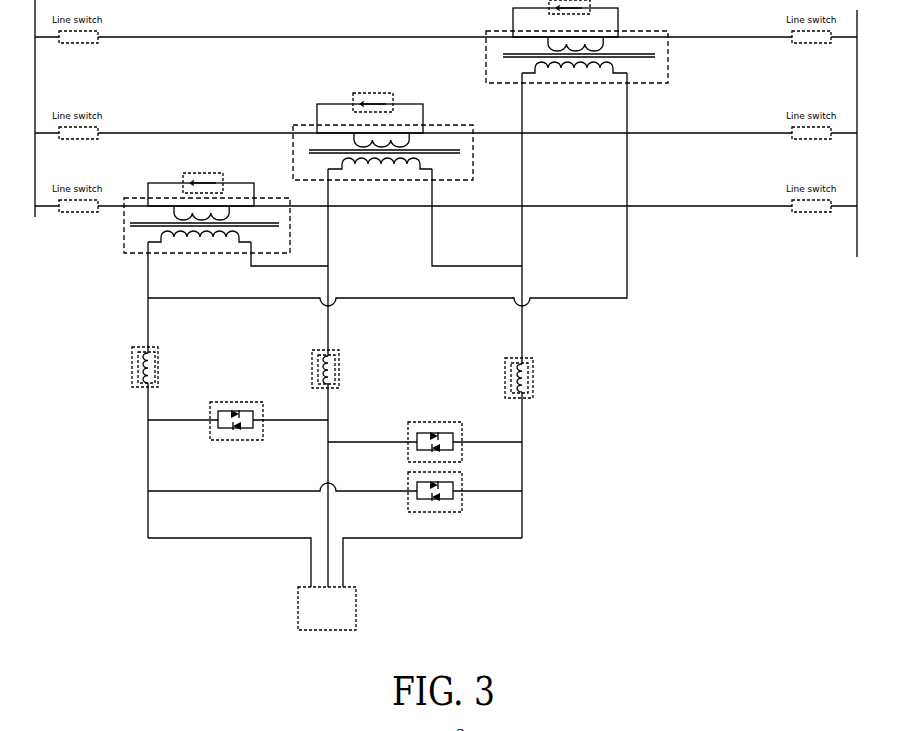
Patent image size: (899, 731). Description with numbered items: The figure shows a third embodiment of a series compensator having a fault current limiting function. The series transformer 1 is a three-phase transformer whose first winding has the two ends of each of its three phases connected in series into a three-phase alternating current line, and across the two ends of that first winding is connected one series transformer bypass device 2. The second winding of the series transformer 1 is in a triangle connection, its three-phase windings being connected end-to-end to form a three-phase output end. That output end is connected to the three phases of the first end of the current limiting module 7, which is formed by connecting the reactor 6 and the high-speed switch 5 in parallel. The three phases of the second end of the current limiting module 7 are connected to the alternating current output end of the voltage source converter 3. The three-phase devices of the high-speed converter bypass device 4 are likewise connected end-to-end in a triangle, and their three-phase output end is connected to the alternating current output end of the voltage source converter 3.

The series transformer 1 is at (148, 233).
The series transformer bypass device 2 is at (207, 181).
The voltage source converter 3 is at (297, 622).
The high-speed converter bypass device 4 is at (212, 441).
The high-speed switch 5 is at (137, 366).
The reactor 6 is at (153, 369).
The current limiting module 7 is at (131, 386).